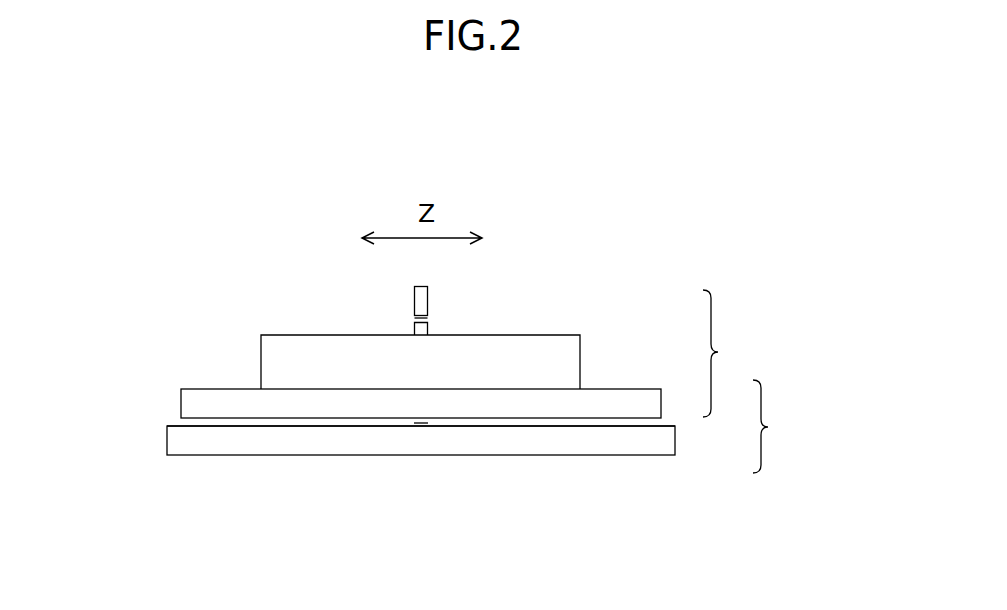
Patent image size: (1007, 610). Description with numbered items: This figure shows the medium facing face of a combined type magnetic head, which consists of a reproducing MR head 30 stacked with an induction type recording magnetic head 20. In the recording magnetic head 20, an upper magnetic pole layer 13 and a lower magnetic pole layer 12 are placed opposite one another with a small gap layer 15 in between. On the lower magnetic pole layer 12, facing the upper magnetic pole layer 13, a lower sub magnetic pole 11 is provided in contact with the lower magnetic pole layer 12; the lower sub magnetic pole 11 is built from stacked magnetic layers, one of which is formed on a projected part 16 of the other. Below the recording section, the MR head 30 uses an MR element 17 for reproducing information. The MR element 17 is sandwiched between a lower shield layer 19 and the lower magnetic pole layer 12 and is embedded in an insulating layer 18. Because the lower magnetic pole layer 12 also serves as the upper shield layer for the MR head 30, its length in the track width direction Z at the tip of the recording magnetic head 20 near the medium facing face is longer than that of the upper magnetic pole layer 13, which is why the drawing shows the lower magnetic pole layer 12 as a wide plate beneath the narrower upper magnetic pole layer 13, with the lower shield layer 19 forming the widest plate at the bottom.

The lower sub magnetic pole 11 is at (276, 343).
The lower magnetic pole layer 12 is at (223, 397).
The upper magnetic pole layer 13 is at (428, 300).
The gap layer 15 is at (428, 318).
The projected part 16 is at (428, 333).
The MR element 17 is at (420, 425).
The insulating layer 18 is at (180, 425).
The lower shield layer 19 is at (310, 445).
The recording magnetic head 20 is at (727, 353).
The MR head 30 is at (778, 426).